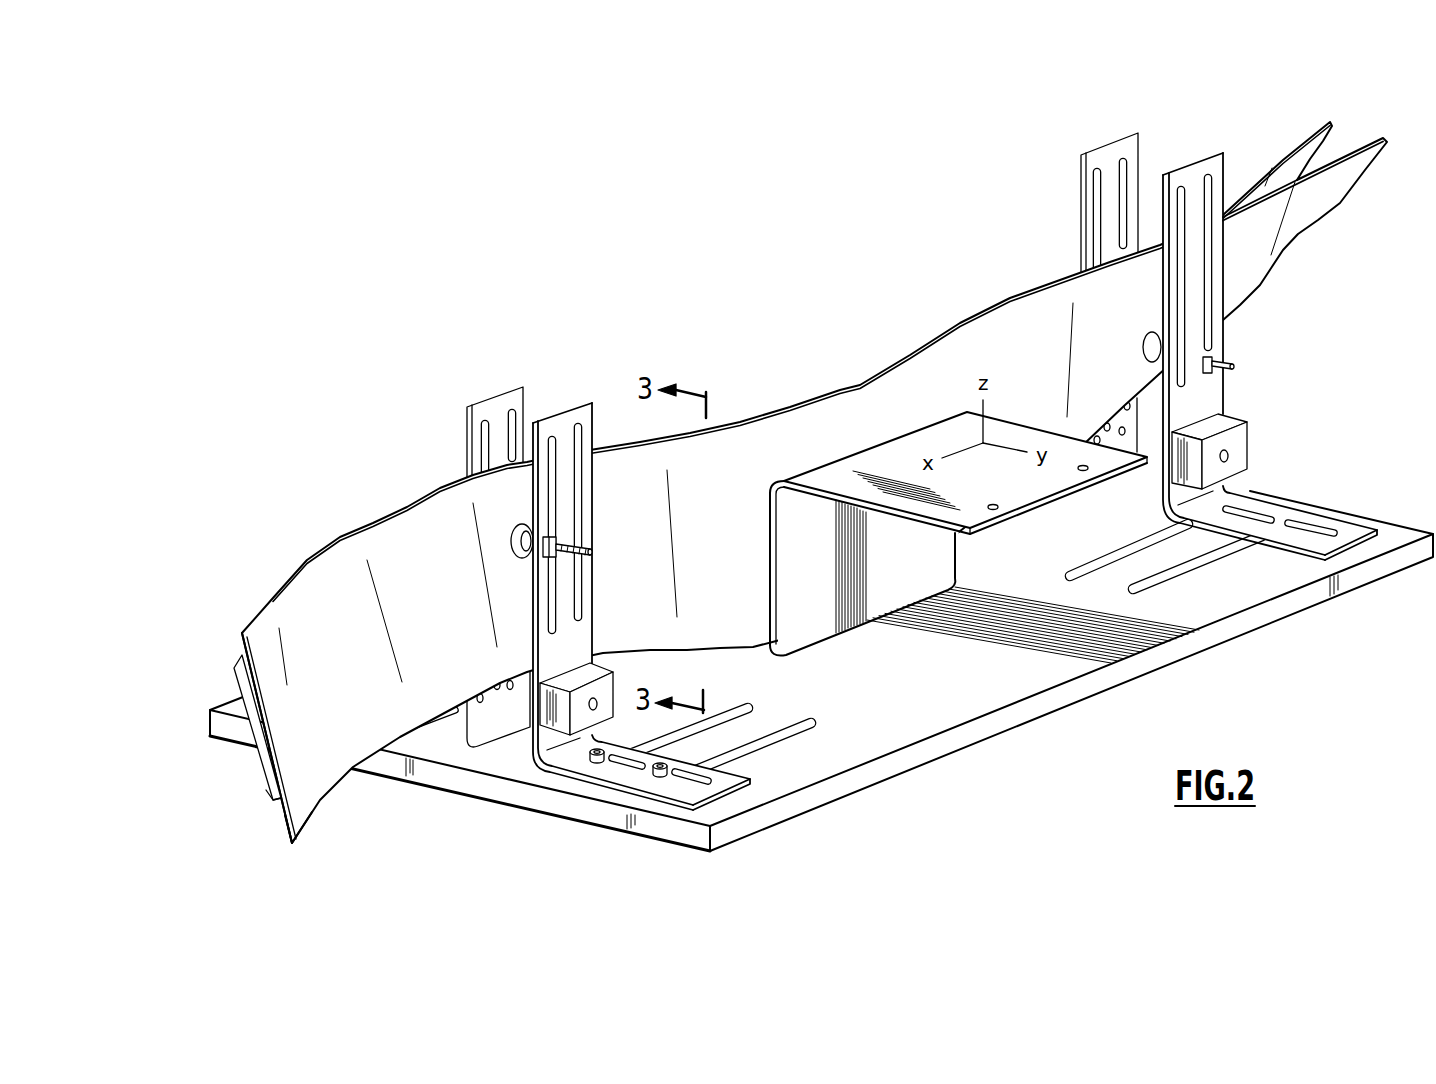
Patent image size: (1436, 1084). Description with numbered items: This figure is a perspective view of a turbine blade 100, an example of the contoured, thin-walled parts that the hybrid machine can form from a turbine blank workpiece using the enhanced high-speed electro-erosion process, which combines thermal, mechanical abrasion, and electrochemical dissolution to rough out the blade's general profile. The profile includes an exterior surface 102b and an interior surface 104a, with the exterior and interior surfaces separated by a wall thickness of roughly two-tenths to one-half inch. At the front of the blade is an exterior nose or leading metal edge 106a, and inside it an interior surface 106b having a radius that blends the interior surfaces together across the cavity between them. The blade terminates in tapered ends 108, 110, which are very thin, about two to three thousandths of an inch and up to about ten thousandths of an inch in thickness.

The turbine blade 100 is at (272, 534).
The exterior surface 102b is at (458, 627).
The interior surface 104a is at (1278, 143).
The exterior nose or leading metal edge 106a is at (291, 848).
The interior surface having a radius 106b is at (273, 798).
The tapered end 108 is at (238, 670).
The tapered end 110 is at (242, 632).